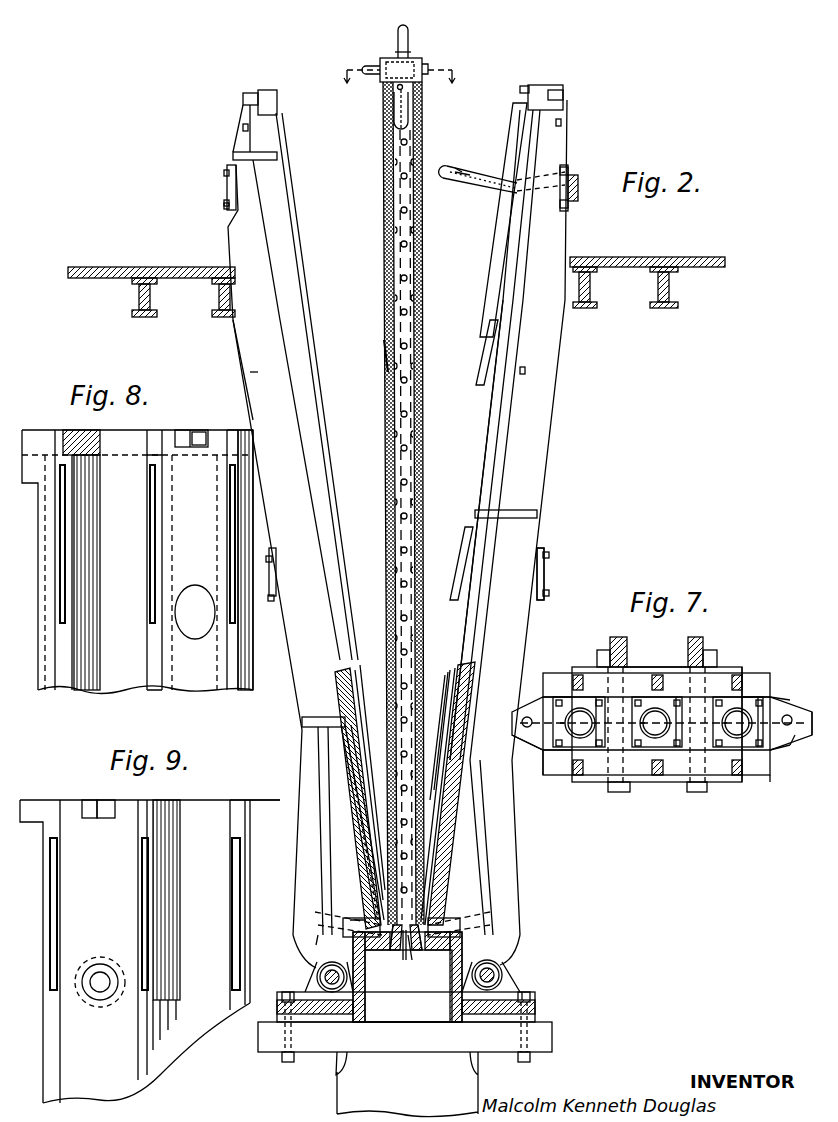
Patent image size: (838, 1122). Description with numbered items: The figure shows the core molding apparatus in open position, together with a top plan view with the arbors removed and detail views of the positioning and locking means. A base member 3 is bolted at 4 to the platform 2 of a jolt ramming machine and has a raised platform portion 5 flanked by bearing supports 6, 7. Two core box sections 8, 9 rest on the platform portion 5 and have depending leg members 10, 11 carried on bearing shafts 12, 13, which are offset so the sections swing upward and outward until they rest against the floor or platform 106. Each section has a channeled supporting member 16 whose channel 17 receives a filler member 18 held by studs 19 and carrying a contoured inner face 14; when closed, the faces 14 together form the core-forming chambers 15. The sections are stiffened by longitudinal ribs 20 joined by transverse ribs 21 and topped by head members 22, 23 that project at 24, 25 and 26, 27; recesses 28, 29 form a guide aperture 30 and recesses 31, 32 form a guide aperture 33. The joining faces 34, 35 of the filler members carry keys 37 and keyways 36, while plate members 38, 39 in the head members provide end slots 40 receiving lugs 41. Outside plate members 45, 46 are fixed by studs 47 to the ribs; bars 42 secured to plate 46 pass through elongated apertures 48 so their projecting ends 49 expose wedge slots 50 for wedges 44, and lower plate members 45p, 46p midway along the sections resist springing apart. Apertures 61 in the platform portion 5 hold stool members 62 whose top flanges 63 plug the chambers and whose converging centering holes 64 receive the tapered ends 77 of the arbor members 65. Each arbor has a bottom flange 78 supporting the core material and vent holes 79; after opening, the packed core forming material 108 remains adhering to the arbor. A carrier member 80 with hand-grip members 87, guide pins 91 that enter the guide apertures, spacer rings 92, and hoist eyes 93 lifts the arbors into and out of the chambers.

In FIG. 2, the platform 2 is at (553, 1035).
In FIG. 2, the base member 3 is at (536, 1010).
In FIG. 2, the bolts 4 is at (283, 1064).
In FIG. 2, the raised platform portion 5 is at (414, 950).
In FIG. 2, the bearing supports 6 is at (512, 990).
In FIG. 2, the bearing supports 7 is at (305, 992).
In FIG. 2, the core box section 8 is at (540, 480).
In FIG. 9, the core box section 8 is at (260, 800).
In FIG. 7, the core box section 8 is at (768, 776).
In FIG. 2, the core box section 9 is at (248, 352).
In FIG. 8, the core box section 9 is at (40, 690).
In FIG. 7, the core box section 9 is at (662, 725).
In FIG. 2, the leg members 10 is at (512, 940).
In FIG. 2, the leg members 11 is at (302, 940).
In FIG. 2, the bearing shaft 12 is at (500, 973).
In FIG. 2, the bearing shaft 13 is at (320, 975).
In FIG. 2, the inner face 14 is at (294, 688).
In FIG. 8, the inner face 14 is at (150, 690).
In FIG. 9, the inner face 14 is at (226, 808).
In FIG. 7, the inner face 14 is at (775, 690).
In FIG. 7, the core-forming chamber 15 is at (575, 715).
In FIG. 2, the supporting member 16 is at (360, 800).
In FIG. 2, the channel 17 is at (370, 840).
In FIG. 7, the channel 17 is at (575, 750).
In FIG. 2, the filler member 18 is at (356, 672).
In FIG. 7, the filler member 18 is at (596, 700).
In FIG. 2, the studs 19 is at (243, 127).
In FIG. 7, the studs 19 is at (560, 780).
In FIG. 2, the longitudinal reinforcing ribs 20 is at (258, 375).
In FIG. 7, the longitudinal reinforcing ribs 20 is at (660, 760).
In FIG. 2, the transverse ribs 21 is at (235, 157).
In FIG. 7, the transverse ribs 21 is at (765, 690).
In FIG. 2, the head member 22 is at (563, 96).
In FIG. 7, the head member 22 is at (626, 784).
In FIG. 2, the head member 23 is at (243, 97).
In FIG. 7, the head member 23 is at (640, 667).
In FIG. 2, the projecting portion 24 is at (545, 88).
In FIG. 7, the projecting portion 24 is at (545, 765).
In FIG. 2, the projecting portion 25 is at (262, 94).
In FIG. 7, the projecting portion 25 is at (545, 692).
In FIG. 7, the projecting portion 26 is at (766, 776).
In FIG. 7, the projecting portion 27 is at (778, 697).
In FIG. 7, the recess 28 is at (540, 760).
In FIG. 7, the recess 29 is at (526, 717).
In FIG. 7, the guide aperture 30 is at (530, 742).
In FIG. 7, the recess 31 is at (780, 748).
In FIG. 7, the recess 32 is at (788, 715).
In FIG. 7, the guide aperture 33 is at (785, 752).
In FIG. 2, the joining face 34 is at (478, 465).
In FIG. 9, the joining face 34 is at (150, 951).
In FIG. 2, the joining face 35 is at (331, 460).
In FIG. 8, the joining face 35 is at (233, 690).
In FIG. 8, the keyways 36 is at (152, 517).
In FIG. 2, the keys 37 is at (514, 126).
In FIG. 9, the keys 37 is at (142, 888).
In FIG. 8, the plate member 38 is at (204, 432).
In FIG. 7, the plate member 38 is at (579, 722).
In FIG. 9, the plate member 39 is at (107, 818).
In FIG. 7, the plate member 39 is at (657, 722).
In FIG. 8, the end slots 40 is at (188, 432).
In FIG. 2, the lugs 41 is at (520, 88).
In FIG. 9, the lugs 41 is at (92, 818).
In FIG. 7, the lugs 41 is at (738, 722).
In FIG. 2, the bars 42 is at (490, 178).
In FIG. 9, the bars 42 is at (100, 982).
In FIG. 7, the wedges 44 is at (600, 652).
In FIG. 2, the plate member 45 is at (566, 170).
In FIG. 2, the lower plate member 45p is at (541, 582).
In FIG. 2, the plate member 46 is at (228, 185).
In FIG. 2, the lower plate member 46p is at (276, 562).
In FIG. 2, the studs 47 is at (228, 208).
In FIG. 8, the elongated apertures 48 is at (176, 612).
In FIG. 2, the projecting ends 49 is at (457, 176).
In FIG. 7, the projecting ends 49 is at (618, 640).
In FIG. 2, the wedge slots 50 is at (458, 170).
In FIG. 2, the apertures 61 is at (418, 950).
In FIG. 2, the stool members 62 is at (396, 950).
In FIG. 2, the top flange 63 is at (442, 930).
In FIG. 2, the centering holes 64 is at (400, 955).
In FIG. 2, the arbor member 65 is at (398, 242).
In FIG. 2, the tapered end 77 is at (407, 977).
In FIG. 2, the circumferential flange 78 is at (378, 918).
In FIG. 2, the vent holes 79 is at (408, 279).
In FIG. 2, the carrier member 80 is at (418, 60).
In FIG. 2, the hand-grip members 87 is at (376, 64).
In FIG. 2, the guide members 91 is at (397, 112).
In FIG. 2, the spacer means 92 is at (396, 88).
In FIG. 2, the hoist attaching means 93 is at (408, 30).
In FIG. 2, the platform 106 is at (650, 258).
In FIG. 2, the core forming material 108 is at (385, 358).